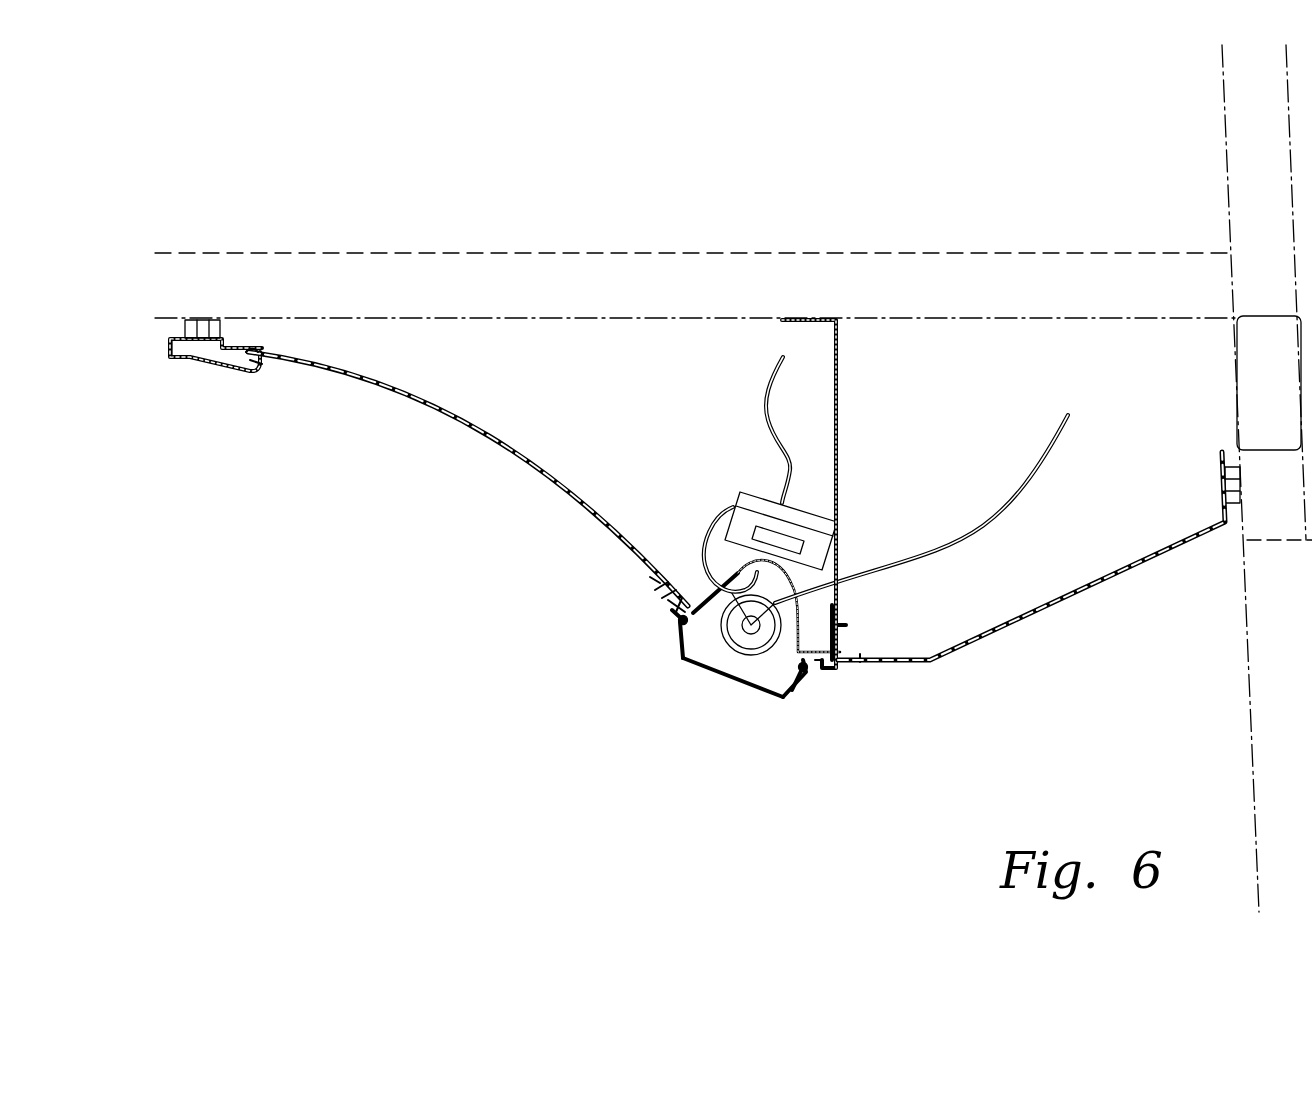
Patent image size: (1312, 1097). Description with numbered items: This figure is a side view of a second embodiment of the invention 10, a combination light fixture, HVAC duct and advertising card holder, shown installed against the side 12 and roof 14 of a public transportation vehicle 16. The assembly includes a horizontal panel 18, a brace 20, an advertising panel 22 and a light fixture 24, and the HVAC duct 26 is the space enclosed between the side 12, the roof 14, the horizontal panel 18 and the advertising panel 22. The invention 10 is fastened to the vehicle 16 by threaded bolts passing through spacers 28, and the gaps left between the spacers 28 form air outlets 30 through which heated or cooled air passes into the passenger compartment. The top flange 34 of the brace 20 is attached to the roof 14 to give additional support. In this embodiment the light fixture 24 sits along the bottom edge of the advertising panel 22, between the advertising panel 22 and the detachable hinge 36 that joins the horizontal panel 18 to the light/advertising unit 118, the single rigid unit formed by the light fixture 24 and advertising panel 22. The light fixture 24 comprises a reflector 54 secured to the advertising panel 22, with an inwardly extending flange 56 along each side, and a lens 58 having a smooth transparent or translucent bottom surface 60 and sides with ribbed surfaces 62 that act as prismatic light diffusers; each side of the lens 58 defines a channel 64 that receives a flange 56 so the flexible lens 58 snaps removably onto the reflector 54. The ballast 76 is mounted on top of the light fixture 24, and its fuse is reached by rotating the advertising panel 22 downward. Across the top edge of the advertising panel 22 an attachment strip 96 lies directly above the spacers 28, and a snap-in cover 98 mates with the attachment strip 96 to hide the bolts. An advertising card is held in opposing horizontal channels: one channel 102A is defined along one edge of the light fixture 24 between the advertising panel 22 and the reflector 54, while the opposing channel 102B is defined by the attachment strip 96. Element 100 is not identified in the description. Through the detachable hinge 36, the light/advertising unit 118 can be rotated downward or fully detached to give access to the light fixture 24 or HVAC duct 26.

The invention 10 is at (405, 592).
The side 12 is at (1266, 699).
The roof 14 is at (477, 298).
The public transportation vehicle 16 is at (607, 291).
The horizontal panel 18 is at (1060, 597).
The brace 20 is at (838, 392).
The advertising panel 22 is at (393, 390).
The light fixture 24 is at (726, 724).
The HVAC duct 26 is at (572, 391).
The spacers 28 is at (207, 320).
The air outlets 30 is at (228, 327).
The top flange 34 is at (810, 322).
The detachable hinge 36 is at (872, 765).
The reflector 54 is at (700, 603).
The inwardly extending flange 56 is at (677, 617).
The lens 58 is at (738, 683).
The bottom surface 60 is at (700, 668).
The ribbed surfaces 62 is at (682, 657).
The channel 64 is at (677, 627).
The ballast 76 is at (748, 500).
The attachment strip 96 is at (173, 337).
The snap-in cover 98 is at (225, 372).
The panel facing 100 is at (507, 447).
The horizontal channel 102A is at (645, 571).
The horizontal channel 102B is at (272, 360).
The light/advertising unit 118 is at (510, 622).